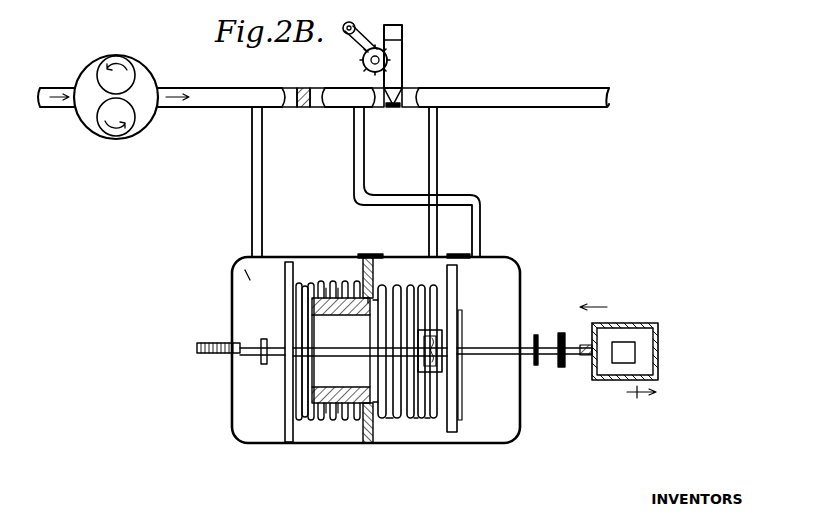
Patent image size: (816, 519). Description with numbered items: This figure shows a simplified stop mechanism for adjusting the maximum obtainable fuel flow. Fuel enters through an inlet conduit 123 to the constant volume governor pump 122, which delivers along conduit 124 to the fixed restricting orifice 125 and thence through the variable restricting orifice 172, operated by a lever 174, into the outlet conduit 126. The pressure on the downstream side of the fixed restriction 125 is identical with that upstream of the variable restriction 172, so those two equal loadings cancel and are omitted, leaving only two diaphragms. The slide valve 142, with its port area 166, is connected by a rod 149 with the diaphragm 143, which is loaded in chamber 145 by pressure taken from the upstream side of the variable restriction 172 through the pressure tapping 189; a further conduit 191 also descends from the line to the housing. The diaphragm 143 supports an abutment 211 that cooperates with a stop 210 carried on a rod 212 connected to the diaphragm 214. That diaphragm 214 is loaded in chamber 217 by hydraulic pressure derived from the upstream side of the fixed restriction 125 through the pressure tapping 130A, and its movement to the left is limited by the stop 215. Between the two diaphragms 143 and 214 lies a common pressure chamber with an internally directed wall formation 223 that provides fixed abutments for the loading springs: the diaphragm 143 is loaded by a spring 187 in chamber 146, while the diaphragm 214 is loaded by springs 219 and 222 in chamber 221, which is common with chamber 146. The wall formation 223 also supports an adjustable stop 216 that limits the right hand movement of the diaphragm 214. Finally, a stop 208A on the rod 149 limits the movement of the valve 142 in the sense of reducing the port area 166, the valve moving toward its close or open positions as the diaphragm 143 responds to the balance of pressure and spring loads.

The inlet conduit 123 is at (52, 86).
The constant volume governor pump 122 is at (126, 70).
The conduit 124 is at (216, 96).
The fixed restricting orifice 125 is at (298, 92).
The valve actuating lever 174 is at (352, 40).
The variable restricting orifice 172 is at (407, 98).
The outlet conduit 126 is at (522, 96).
The pressure tapping 130A is at (256, 168).
The pressure tapping 189 is at (354, 163).
The pressure conduit 191 is at (438, 131).
The internally directed wall formation 223 is at (366, 297).
The spring 219 is at (321, 286).
The spring 187 is at (394, 300).
The stop 210 is at (408, 300).
The chamber 145 is at (497, 270).
The chamber 217 is at (247, 276).
The slide valve 142 is at (602, 323).
The rod 149 is at (546, 346).
The stop 215 is at (210, 345).
The diaphragm 214 is at (287, 396).
The stop 208A is at (561, 369).
The port area 166 is at (628, 360).
The spring 222 is at (322, 420).
The rod 212 is at (333, 414).
The chamber 221 is at (342, 436).
The adjustable stop 216 is at (380, 412).
The chamber 146 is at (420, 432).
The diaphragm 143 is at (441, 373).
The abutment 211 is at (458, 400).